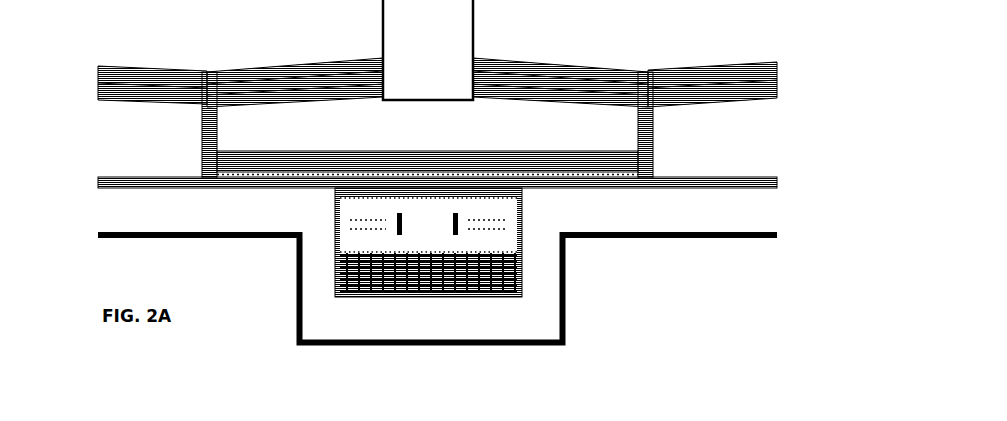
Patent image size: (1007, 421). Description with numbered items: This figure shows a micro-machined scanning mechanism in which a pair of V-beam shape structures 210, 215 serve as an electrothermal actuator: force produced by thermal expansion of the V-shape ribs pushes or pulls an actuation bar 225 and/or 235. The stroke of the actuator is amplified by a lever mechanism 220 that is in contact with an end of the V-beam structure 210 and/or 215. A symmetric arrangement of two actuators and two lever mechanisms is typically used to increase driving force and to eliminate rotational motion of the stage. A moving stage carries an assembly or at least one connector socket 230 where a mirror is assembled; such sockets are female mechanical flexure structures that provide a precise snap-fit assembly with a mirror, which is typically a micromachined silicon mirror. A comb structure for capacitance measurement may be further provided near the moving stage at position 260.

The V-beam shape structure 210 is at (186, 113).
The V-beam shape structure 215 is at (704, 109).
The lever mechanism 220 is at (306, 183).
The actuation bar 225 is at (199, 138).
The actuation bar 235 is at (664, 135).
The connector socket 230 is at (567, 275).
The comb structure position 260 is at (531, 288).